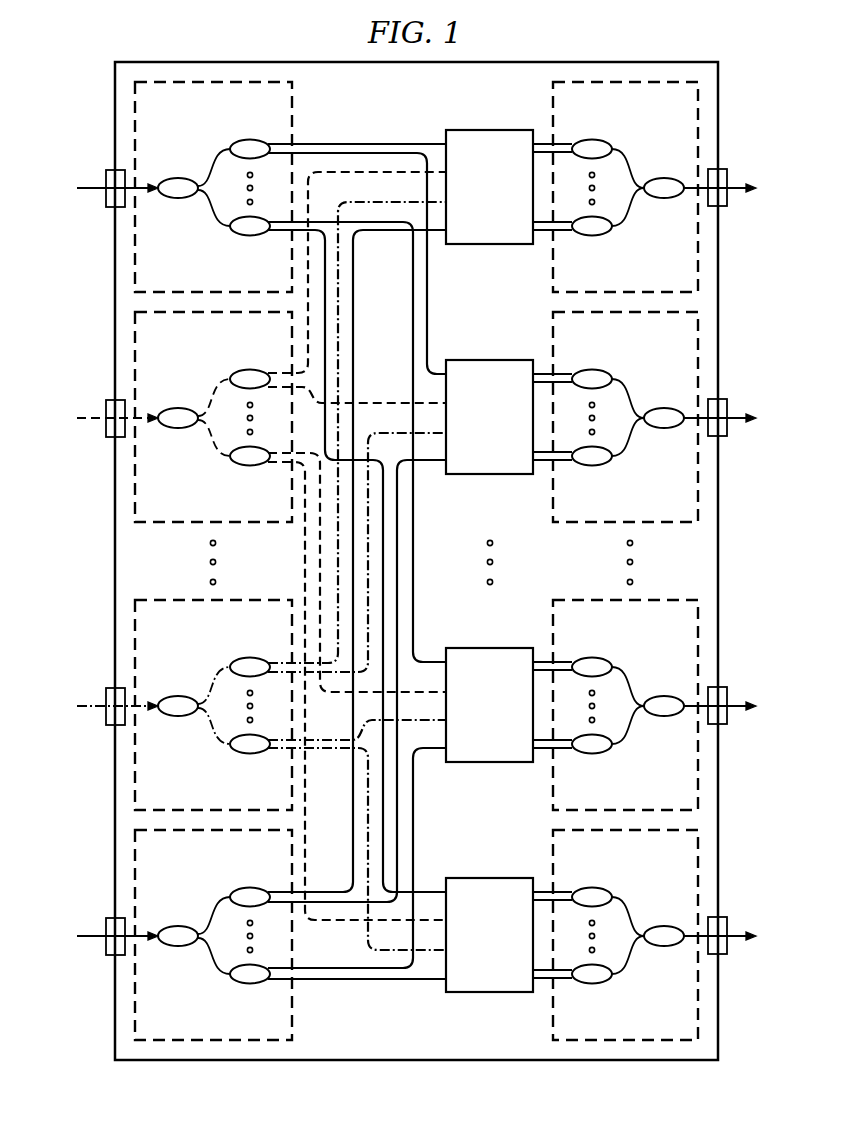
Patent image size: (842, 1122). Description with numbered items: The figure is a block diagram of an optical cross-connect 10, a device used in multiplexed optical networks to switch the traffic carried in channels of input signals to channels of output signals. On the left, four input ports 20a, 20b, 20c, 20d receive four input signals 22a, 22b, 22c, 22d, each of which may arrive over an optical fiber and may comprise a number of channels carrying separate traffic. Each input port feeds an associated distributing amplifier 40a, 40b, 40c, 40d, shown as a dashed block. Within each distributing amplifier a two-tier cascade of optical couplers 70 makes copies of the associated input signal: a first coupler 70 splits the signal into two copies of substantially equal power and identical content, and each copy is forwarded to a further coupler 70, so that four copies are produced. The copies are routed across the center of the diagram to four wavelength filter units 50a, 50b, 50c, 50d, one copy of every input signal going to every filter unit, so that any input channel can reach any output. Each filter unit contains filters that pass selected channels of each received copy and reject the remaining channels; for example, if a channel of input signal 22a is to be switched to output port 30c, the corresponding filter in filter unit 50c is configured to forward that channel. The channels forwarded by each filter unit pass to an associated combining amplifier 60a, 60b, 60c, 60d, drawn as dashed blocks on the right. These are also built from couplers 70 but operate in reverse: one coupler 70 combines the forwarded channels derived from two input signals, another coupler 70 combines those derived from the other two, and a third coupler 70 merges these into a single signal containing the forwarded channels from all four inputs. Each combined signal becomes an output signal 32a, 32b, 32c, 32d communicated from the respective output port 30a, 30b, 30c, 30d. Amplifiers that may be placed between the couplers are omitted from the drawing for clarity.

The optical cross-connect 10 is at (239, 59).
The input port 20a is at (101, 197).
The input port 20b is at (101, 427).
The input port 20c is at (101, 715).
The input port 20d is at (101, 945).
The input signal 22a is at (100, 183).
The input signal 22b is at (100, 413).
The input signal 22c is at (100, 701).
The input signal 22d is at (100, 931).
The output port 30a is at (736, 210).
The output port 30b is at (736, 440).
The output port 30c is at (736, 728).
The output port 30d is at (736, 958).
The output signal 32a is at (737, 180).
The output signal 32b is at (737, 410).
The output signal 32c is at (737, 698).
The output signal 32d is at (737, 928).
The distributing amplifier 40a is at (163, 277).
The distributing amplifier 40b is at (163, 507).
The distributing amplifier 40c is at (163, 795).
The distributing amplifier 40d is at (163, 1025).
The wavelength filter unit 50a is at (473, 225).
The wavelength filter unit 50b is at (473, 455).
The wavelength filter unit 50c is at (473, 743).
The wavelength filter unit 50d is at (473, 973).
The combining amplifier 60a is at (648, 277).
The combining amplifier 60b is at (648, 507).
The combining amplifier 60c is at (648, 795).
The combining amplifier 60d is at (648, 1025).
The optical coupler 70 is at (178, 178).